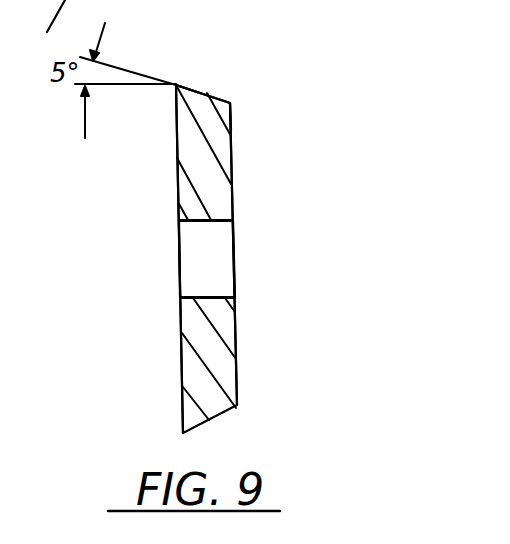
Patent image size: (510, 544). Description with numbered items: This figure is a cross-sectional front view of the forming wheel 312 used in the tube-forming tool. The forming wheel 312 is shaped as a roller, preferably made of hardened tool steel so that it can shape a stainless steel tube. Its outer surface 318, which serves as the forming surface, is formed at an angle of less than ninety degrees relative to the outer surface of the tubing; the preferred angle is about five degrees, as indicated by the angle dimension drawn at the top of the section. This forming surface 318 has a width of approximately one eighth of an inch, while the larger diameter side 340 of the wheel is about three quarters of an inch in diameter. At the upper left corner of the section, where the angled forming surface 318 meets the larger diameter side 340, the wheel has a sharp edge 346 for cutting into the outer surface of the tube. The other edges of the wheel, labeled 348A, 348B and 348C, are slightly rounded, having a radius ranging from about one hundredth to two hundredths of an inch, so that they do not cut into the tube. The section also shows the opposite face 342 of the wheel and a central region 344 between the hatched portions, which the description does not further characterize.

The forming wheel 312 is at (322, 144).
The outer surface 318 is at (207, 95).
The larger diameter side 340 is at (177, 157).
The back face of blade 342 is at (232, 173).
The middle (relief) section of blade 344 is at (204, 264).
The sharp edge 346 is at (177, 84).
The rounded edge 348A is at (229, 106).
The rounded edge 348B is at (233, 220).
The rounded edge 348C is at (179, 230).